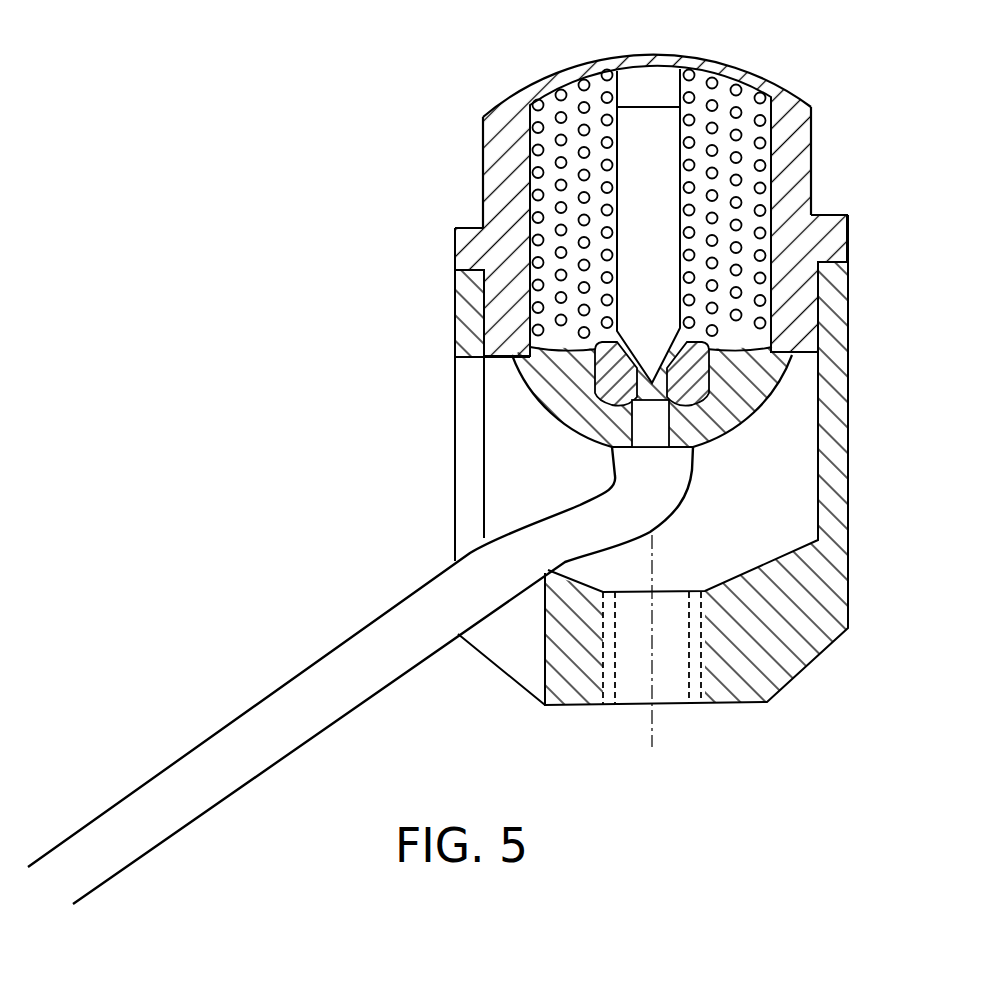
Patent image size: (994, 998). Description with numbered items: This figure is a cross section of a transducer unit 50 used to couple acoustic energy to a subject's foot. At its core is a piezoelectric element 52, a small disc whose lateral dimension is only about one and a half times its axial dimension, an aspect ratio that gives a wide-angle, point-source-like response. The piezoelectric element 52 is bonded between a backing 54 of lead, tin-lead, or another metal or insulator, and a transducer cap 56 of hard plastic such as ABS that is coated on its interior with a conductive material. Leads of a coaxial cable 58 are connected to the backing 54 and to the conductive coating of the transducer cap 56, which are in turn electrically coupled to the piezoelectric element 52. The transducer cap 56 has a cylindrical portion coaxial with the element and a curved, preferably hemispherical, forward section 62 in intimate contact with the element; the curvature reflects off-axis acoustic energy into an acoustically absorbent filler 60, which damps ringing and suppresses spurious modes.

The transducer unit 50 is at (823, 683).
The piezoelectric element 52 is at (663, 77).
The backing 54 is at (667, 282).
The transducer cap 56 is at (670, 178).
The coaxial cable 58 is at (345, 698).
The acoustically absorbent filler 60 is at (671, 114).
The forward section 62 is at (617, 62).